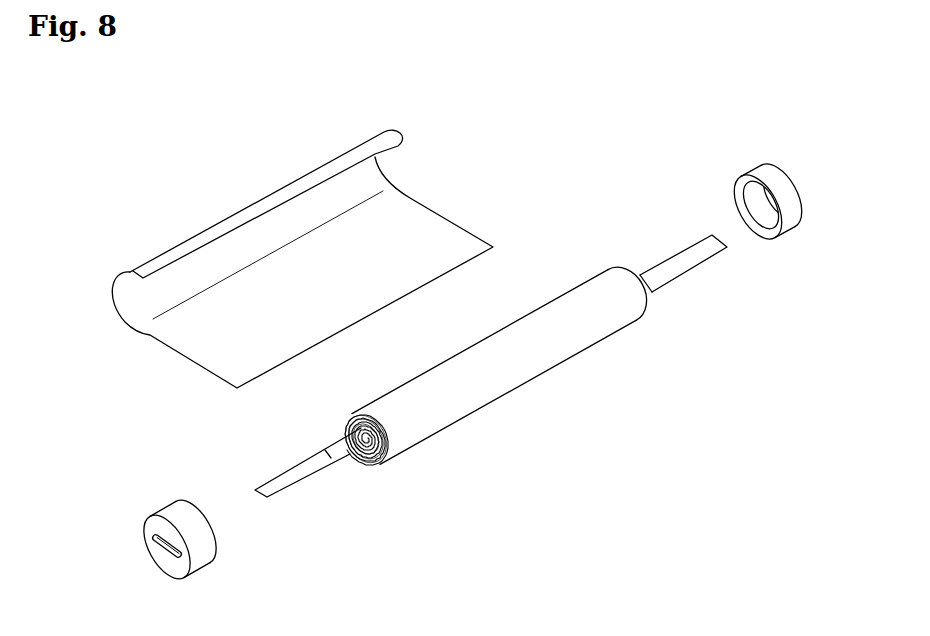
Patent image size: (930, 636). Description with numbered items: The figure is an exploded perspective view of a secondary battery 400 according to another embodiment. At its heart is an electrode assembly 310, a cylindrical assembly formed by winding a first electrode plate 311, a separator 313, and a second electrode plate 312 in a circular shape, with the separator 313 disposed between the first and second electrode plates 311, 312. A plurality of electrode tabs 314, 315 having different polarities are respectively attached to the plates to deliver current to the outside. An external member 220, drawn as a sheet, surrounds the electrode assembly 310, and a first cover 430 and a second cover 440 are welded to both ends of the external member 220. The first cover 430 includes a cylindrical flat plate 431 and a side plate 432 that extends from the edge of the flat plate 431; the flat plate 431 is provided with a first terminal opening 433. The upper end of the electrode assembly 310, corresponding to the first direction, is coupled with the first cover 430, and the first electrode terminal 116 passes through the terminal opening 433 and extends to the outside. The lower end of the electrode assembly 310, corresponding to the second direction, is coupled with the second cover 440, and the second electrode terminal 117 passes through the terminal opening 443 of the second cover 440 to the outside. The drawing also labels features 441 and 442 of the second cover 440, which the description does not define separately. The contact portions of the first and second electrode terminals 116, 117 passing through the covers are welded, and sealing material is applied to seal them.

The secondary battery 400 is at (165, 101).
The external member 220 is at (198, 210).
The electrode assembly 310 is at (496, 395).
The first electrode plate 311 is at (393, 461).
The second electrode plate 312 is at (373, 470).
The separator 313 is at (381, 463).
The electrode tab 314 is at (649, 298).
The electrode tab 315 is at (354, 463).
The first electrode terminal 116 is at (683, 273).
The second electrode terminal 117 is at (290, 475).
The first cover 430 is at (747, 179).
The flat plate 431 is at (765, 213).
The side plate 432 is at (779, 183).
The first terminal opening 433 is at (753, 197).
The second cover 440 is at (144, 555).
The cap plate 441 is at (165, 569).
The cap side wall 442 is at (203, 559).
The terminal opening 443 is at (153, 540).